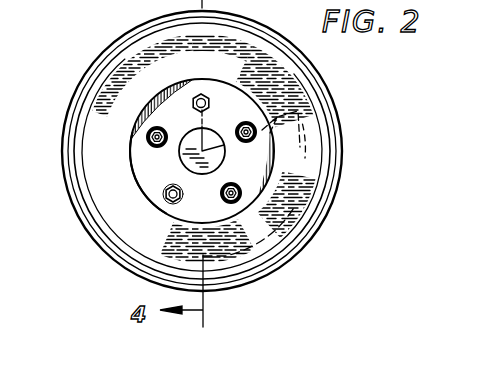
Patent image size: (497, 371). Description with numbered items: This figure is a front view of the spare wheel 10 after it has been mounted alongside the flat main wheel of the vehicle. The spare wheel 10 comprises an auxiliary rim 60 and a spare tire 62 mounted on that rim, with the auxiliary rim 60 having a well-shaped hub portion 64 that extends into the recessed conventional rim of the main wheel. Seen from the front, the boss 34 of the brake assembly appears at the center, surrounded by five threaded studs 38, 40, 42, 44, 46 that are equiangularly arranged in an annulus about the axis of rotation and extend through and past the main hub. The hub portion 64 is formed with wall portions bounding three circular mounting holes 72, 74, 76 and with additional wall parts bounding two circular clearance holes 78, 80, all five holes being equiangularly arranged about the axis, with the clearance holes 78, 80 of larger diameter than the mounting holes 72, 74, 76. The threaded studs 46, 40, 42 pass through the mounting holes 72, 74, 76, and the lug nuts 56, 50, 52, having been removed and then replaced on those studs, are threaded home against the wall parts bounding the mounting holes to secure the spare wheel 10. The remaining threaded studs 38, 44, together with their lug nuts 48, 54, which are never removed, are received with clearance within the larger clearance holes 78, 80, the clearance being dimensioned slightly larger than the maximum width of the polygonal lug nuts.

The spare wheel 10 is at (60, 73).
The boss 34 is at (224, 156).
The threaded stud 38 is at (180, 119).
The threaded stud 40 is at (170, 206).
The threaded stud 42 is at (244, 208).
The threaded stud 44 is at (237, 119).
The threaded stud 46 is at (203, 95).
The lug nut 48 is at (134, 148).
The lug nut 50 is at (163, 195).
The lug nut 52 is at (248, 195).
The lug nut 54 is at (260, 148).
The lug nut 56 is at (208, 99).
The auxiliary rim 60 is at (97, 170).
The spare tire 62 is at (322, 72).
The hub portion 64 is at (313, 163).
The mounting hole 72 is at (188, 84).
The mounting hole 74 is at (171, 187).
The mounting hole 76 is at (223, 193).
The clearance hole 78 is at (168, 128).
The clearance hole 80 is at (248, 123).